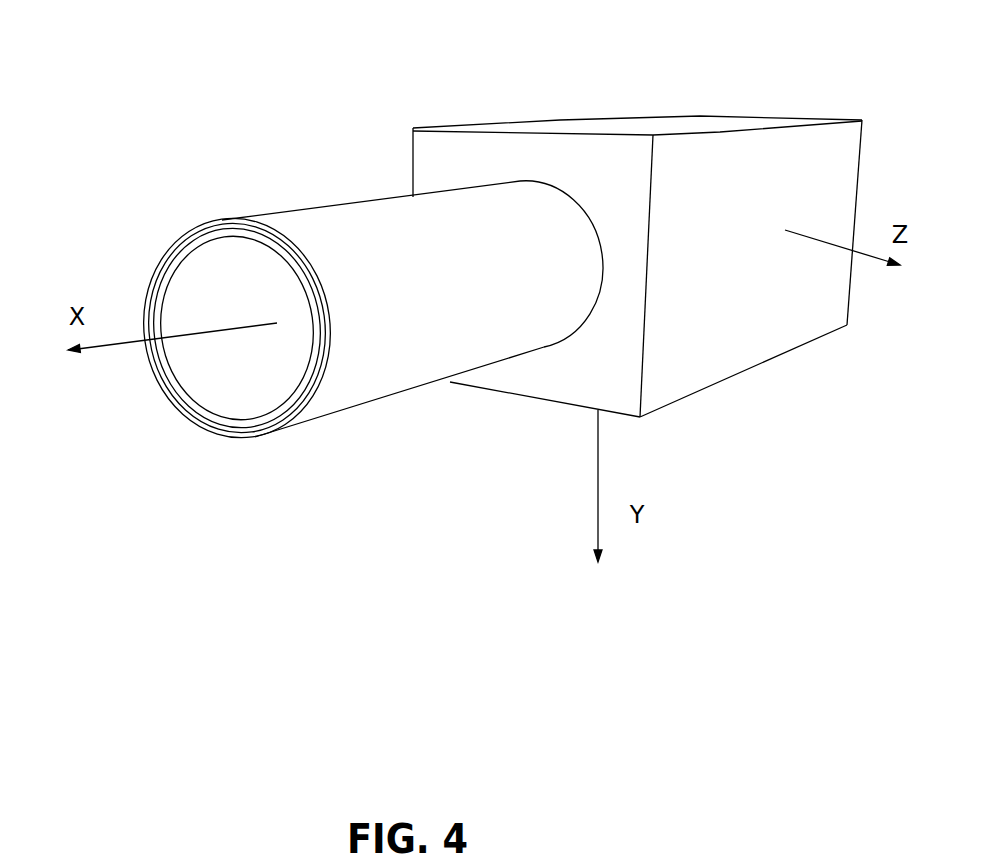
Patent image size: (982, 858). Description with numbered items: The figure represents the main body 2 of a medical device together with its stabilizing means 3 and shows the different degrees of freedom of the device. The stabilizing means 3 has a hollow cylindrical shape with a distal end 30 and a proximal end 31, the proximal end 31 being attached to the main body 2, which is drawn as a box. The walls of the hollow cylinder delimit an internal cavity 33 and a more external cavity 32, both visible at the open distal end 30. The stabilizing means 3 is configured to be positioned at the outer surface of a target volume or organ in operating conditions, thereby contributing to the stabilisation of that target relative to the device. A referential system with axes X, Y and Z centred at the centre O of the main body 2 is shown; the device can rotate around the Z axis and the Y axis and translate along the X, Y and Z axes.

The main body 2 is at (715, 312).
The stabilizing means 3 is at (430, 300).
The distal end of the stabilizing means 30 is at (260, 214).
The proximal end of the stabilizing means 31 is at (558, 217).
The external cavity 32 is at (170, 390).
The internal cavity 33 is at (235, 372).